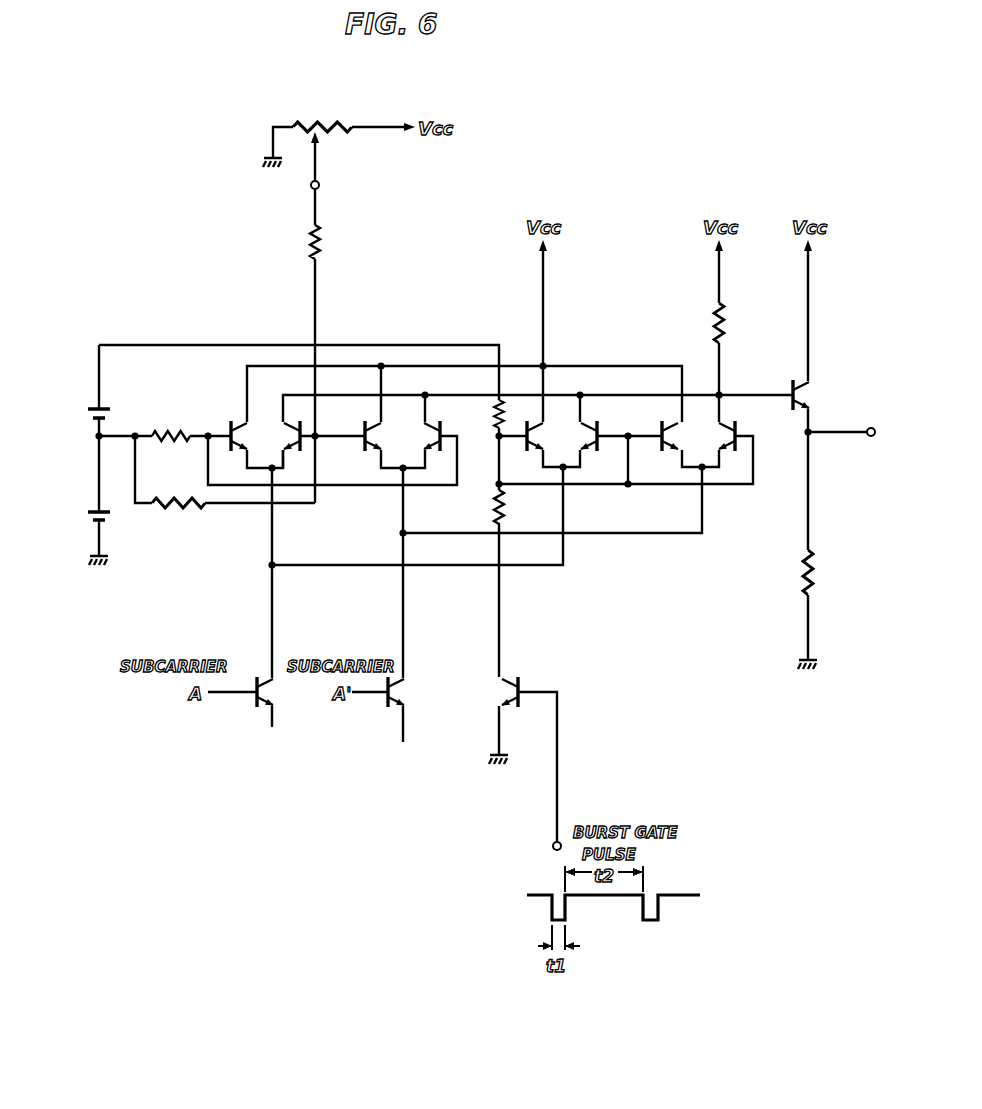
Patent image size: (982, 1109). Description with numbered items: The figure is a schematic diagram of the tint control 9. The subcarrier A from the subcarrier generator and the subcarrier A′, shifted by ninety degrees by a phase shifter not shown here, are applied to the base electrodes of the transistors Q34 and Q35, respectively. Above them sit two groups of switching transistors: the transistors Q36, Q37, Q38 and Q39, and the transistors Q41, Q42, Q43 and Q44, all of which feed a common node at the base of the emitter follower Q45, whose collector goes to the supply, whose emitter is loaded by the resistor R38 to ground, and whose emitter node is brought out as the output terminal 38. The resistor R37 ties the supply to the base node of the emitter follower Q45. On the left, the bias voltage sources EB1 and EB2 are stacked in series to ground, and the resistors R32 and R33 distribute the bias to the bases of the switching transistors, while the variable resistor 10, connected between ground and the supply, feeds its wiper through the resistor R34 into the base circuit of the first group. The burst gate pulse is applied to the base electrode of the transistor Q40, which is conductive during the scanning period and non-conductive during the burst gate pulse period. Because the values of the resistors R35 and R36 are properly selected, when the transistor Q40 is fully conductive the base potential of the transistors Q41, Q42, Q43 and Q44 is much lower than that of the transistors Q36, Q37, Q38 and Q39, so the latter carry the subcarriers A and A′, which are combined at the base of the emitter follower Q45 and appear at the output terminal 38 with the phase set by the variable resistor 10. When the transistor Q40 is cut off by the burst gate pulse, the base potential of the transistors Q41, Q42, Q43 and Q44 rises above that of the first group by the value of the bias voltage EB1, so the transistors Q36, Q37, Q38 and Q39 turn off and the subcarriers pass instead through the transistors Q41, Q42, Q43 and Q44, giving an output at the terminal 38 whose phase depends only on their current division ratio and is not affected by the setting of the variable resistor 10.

The variable resistor 10 is at (328, 140).
The output terminal 38 is at (871, 437).
The tint control 9 is at (370, 778).
The transistor Q34 is at (262, 690).
The transistor Q35 is at (393, 688).
The transistor Q36 is at (258, 434).
The transistor Q37 is at (302, 444).
The transistor Q38 is at (393, 436).
The transistor Q39 is at (442, 444).
The transistor Q40 is at (519, 706).
The transistor Q41 is at (554, 436).
The transistor Q42 is at (598, 445).
The transistor Q43 is at (689, 436).
The transistor Q44 is at (737, 424).
The emitter follower Q45 is at (822, 395).
The resistor R32 is at (170, 441).
The resistor R33 is at (176, 508).
The resistor R34 is at (338, 242).
The resistor R35 is at (486, 416).
The resistor R36 is at (506, 506).
The resistor R37 is at (725, 320).
The resistor R38 is at (816, 572).
The bias voltage EB1 is at (88, 412).
The bias voltage source EB2 is at (88, 516).